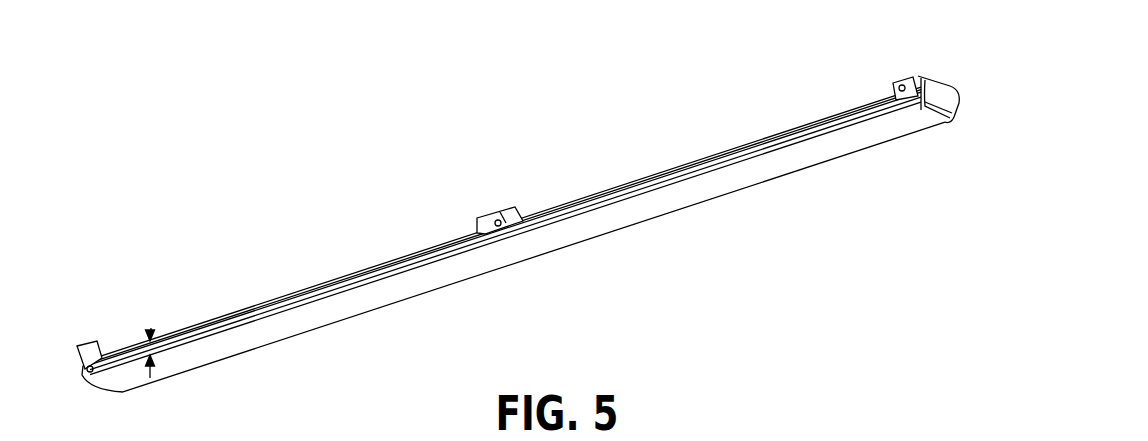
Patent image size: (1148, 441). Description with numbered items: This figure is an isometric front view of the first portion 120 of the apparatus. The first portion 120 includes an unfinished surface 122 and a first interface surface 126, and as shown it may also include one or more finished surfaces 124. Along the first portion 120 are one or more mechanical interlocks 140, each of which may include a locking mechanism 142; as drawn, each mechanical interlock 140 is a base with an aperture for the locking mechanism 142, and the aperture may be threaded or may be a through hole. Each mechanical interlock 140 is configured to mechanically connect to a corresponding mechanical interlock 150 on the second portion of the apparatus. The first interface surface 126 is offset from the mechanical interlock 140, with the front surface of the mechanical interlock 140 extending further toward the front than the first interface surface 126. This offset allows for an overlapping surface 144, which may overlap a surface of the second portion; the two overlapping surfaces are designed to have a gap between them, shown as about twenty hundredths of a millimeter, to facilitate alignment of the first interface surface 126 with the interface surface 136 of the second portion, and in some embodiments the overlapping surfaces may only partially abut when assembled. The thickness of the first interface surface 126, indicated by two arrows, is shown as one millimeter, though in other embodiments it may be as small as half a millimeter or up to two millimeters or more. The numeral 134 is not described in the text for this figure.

The first portion 120 is at (165, 225).
The unfinished surface 122 is at (520, 268).
The finished surface 124 is at (935, 93).
The first interface surface 126 is at (315, 302).
The light source 134 is at (916, 440).
The second interface surface 136 is at (832, 440).
The mechanical interlock 140 is at (61, 338).
The locking mechanism 142 is at (96, 356).
The overlapping surface 144 is at (236, 312).
The corresponding mechanical interlock 150 is at (812, 431).